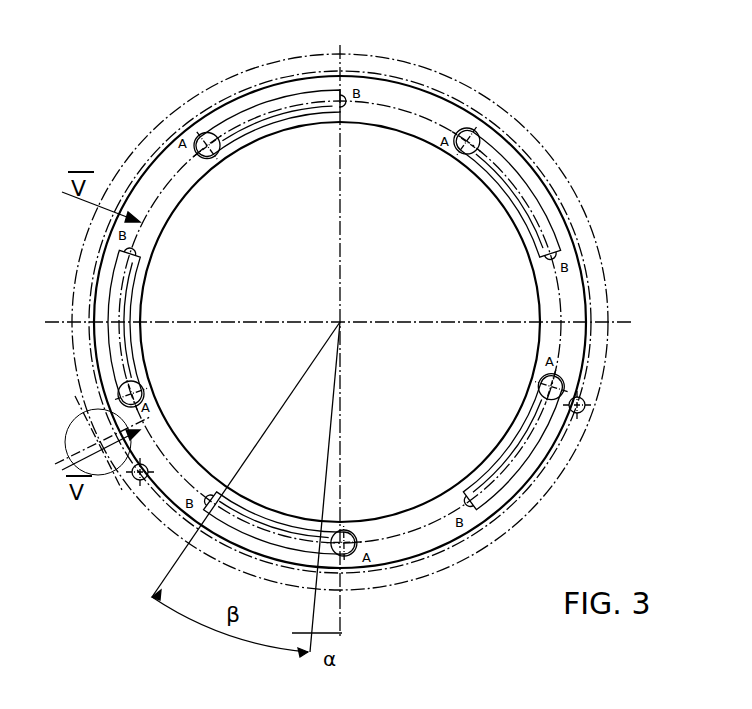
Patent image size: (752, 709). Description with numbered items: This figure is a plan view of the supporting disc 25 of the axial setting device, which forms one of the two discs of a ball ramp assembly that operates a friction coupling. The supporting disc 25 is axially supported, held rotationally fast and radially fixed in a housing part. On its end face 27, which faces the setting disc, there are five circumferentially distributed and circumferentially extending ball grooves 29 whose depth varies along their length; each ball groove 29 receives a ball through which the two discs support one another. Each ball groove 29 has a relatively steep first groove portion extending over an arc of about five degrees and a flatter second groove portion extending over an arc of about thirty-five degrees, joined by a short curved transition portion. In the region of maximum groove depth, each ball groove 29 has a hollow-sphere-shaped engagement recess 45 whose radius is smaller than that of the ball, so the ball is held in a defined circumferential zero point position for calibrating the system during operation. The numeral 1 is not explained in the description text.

The ring body 1 is at (340, 322).
The supporting disc 25 is at (487, 119).
The end face 27 is at (430, 108).
The ball groove 29 is at (523, 192).
The engagement recess 45 is at (550, 384).